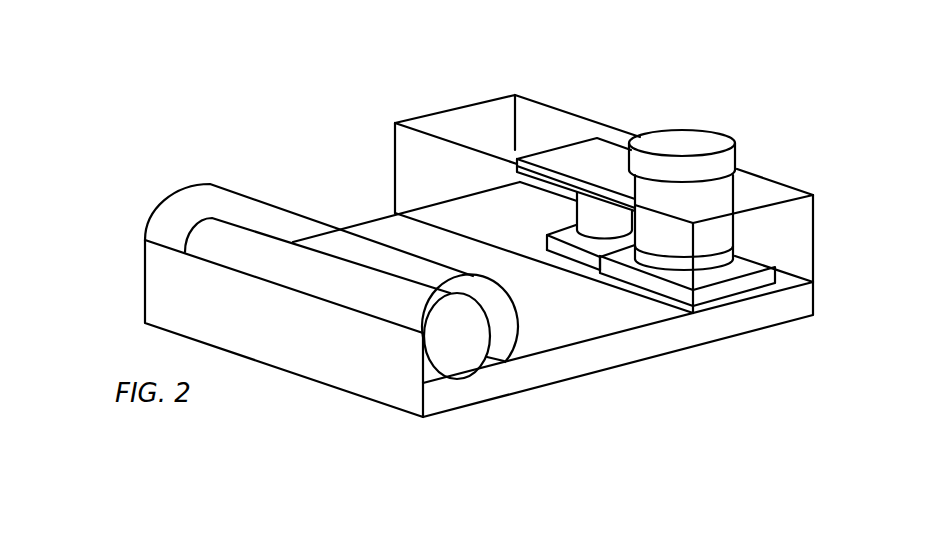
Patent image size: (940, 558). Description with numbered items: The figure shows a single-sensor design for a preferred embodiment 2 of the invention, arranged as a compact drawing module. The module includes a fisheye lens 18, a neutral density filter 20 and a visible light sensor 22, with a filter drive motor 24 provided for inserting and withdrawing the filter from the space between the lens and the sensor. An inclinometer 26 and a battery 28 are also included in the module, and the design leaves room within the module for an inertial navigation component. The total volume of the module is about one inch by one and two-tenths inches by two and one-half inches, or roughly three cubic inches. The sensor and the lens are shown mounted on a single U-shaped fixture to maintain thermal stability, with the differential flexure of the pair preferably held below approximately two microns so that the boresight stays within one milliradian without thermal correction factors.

The preferred embodiment 2 is at (84, 278).
The fisheye lens 18 is at (688, 143).
The neutral density filter 20 is at (720, 256).
The visible light sensor 22 is at (722, 285).
The filter drive motor 24 is at (598, 220).
The inclinometer 26 is at (563, 247).
The battery 28 is at (230, 248).